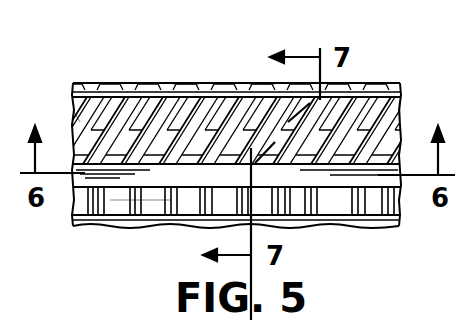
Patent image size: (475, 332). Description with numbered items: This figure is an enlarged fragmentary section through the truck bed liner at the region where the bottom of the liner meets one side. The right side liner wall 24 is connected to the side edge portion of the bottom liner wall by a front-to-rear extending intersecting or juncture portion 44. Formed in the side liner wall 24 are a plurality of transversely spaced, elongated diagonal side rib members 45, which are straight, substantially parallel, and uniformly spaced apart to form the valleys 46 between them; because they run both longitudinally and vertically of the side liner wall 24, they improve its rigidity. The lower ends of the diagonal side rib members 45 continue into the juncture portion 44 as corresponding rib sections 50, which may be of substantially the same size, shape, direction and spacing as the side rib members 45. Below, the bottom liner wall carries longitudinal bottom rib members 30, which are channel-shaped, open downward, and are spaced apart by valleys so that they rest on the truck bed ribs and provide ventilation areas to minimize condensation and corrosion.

The right side liner wall 24 is at (210, 59).
The bottom rib members 30 is at (160, 203).
The juncture portions 44 is at (77, 117).
The diagonal side rib members 45 is at (356, 91).
The valleys 46 is at (253, 83).
The rib sections 50 is at (403, 110).